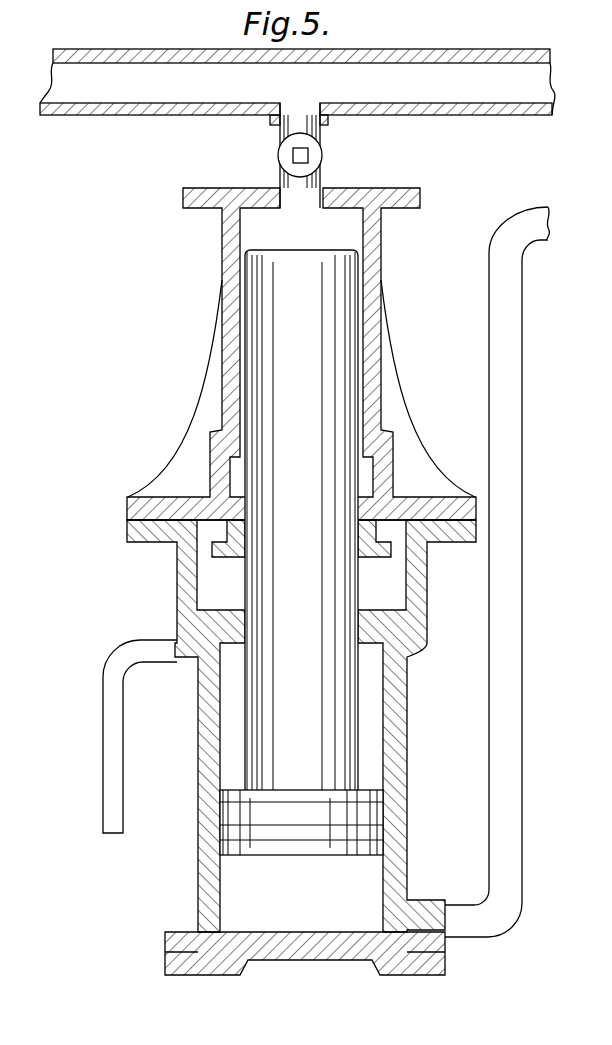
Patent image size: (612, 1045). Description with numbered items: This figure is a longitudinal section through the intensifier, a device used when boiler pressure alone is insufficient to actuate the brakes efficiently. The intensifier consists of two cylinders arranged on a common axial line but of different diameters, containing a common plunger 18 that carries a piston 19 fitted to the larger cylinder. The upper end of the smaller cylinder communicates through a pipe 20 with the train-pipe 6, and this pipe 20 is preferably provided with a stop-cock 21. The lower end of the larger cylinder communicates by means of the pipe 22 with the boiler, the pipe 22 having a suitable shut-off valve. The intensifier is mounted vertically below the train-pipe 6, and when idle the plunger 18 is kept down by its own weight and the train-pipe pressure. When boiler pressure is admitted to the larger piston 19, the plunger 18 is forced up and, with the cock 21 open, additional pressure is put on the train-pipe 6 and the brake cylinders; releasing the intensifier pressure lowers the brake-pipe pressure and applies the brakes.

The train-pipe 6 is at (297, 87).
The plunger 18 is at (301, 520).
The piston 19 is at (301, 822).
The pipe 20 is at (322, 175).
The stop-cock 21 is at (293, 153).
The pipe 22 is at (497, 572).